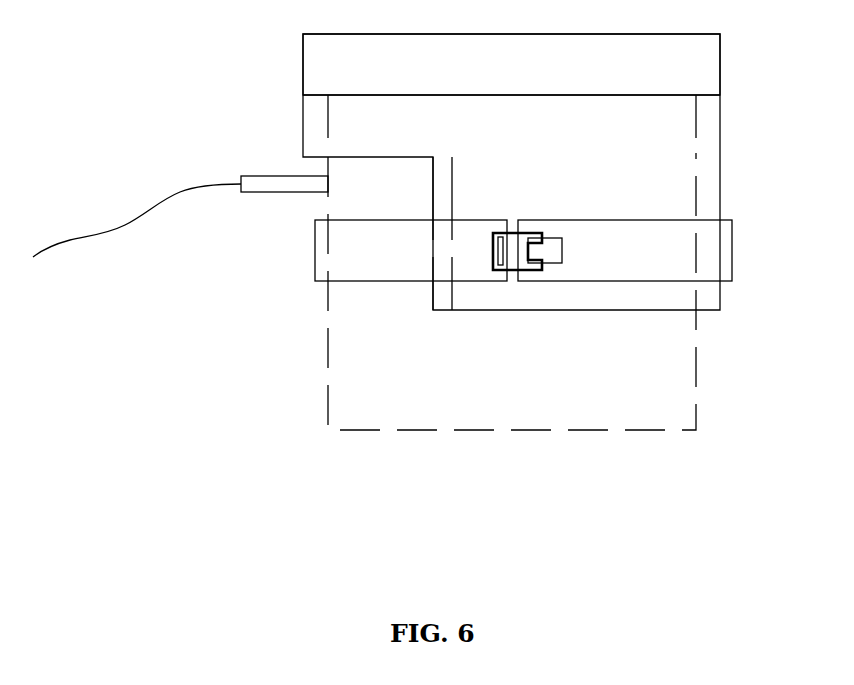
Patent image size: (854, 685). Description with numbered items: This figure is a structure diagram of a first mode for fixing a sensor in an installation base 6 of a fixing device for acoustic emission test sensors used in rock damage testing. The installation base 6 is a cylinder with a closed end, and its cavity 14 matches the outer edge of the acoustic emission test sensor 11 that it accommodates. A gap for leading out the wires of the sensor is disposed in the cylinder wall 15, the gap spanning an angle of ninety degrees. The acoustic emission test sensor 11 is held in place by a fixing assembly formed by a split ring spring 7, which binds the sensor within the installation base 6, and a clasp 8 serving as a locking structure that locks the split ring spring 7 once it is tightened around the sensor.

The installation base 6 is at (708, 158).
The split ring spring 7 is at (658, 252).
The clasp 8 is at (540, 248).
The acoustic emission test sensor 11 is at (353, 390).
The cavity 14 is at (432, 121).
The wall 15 is at (327, 113).